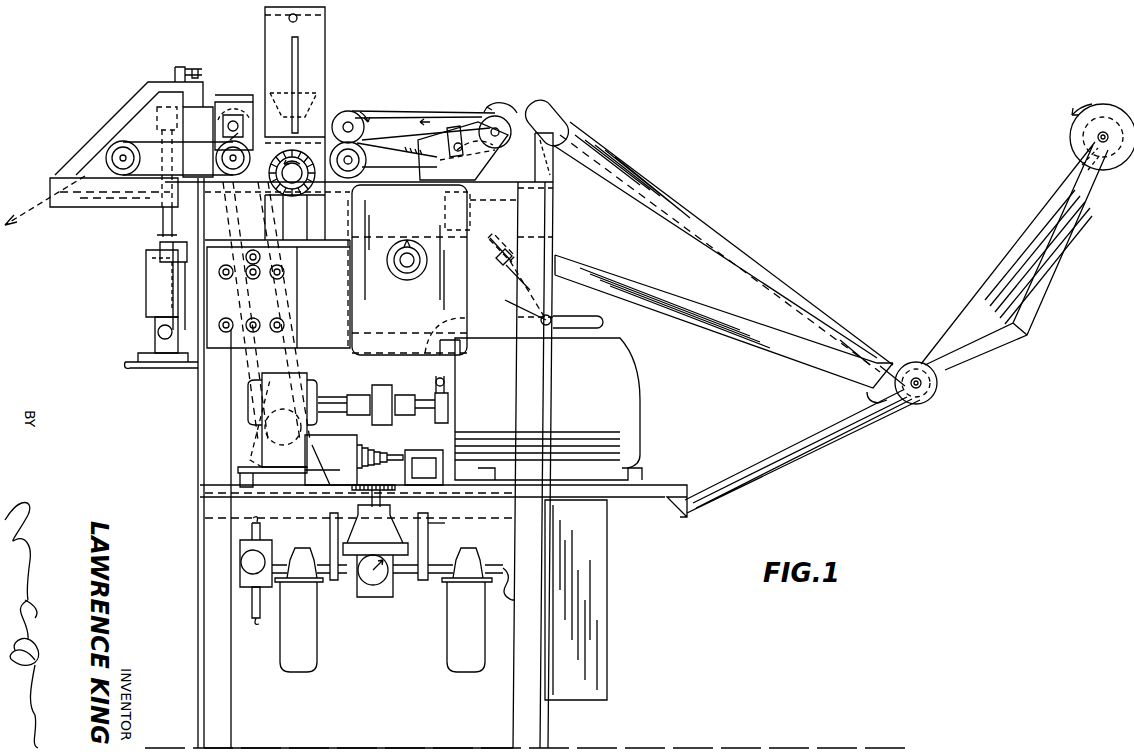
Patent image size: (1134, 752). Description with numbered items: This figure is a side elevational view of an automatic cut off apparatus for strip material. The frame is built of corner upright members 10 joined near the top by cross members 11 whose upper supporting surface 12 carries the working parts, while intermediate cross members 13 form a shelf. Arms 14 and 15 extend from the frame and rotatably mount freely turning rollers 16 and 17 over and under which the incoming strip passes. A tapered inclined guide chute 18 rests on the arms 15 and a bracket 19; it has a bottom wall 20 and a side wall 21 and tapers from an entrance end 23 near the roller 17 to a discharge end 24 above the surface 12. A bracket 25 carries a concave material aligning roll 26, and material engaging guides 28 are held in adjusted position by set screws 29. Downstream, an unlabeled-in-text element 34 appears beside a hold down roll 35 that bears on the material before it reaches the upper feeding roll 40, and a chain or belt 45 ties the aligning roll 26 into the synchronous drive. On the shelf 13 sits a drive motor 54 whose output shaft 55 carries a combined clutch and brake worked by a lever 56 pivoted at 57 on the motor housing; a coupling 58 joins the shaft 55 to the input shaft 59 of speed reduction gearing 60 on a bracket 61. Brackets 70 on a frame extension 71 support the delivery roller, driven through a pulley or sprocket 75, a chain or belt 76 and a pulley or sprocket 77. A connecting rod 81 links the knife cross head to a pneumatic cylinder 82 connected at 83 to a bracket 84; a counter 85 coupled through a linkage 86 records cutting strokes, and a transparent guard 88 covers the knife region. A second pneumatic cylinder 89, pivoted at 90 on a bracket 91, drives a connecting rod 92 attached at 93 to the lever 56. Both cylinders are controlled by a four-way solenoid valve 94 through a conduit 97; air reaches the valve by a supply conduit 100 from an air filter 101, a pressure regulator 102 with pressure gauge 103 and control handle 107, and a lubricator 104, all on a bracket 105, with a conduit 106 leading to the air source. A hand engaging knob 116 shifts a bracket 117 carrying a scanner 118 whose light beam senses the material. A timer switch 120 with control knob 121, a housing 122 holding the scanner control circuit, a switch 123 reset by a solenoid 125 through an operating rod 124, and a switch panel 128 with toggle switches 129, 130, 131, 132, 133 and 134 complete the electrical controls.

The corner upright members 10 is at (198, 636).
The cross members 11 is at (507, 210).
The upper supporting surface 12 is at (507, 186).
The intermediate cross members 13 is at (485, 508).
The arm 14 is at (780, 448).
The arm 15 is at (718, 312).
The roll 16 is at (1075, 142).
The roller 17 is at (939, 388).
The tapered inclined guide chute 18 is at (832, 320).
The bracket 19 is at (575, 130).
The bottom wall 20 is at (672, 249).
The side wall 21 is at (784, 272).
The entrance end 23 is at (867, 400).
The discharge end 24 is at (540, 112).
The bracket 25 is at (480, 160).
The concave material aligning roll 26 is at (503, 120).
The material engaging guides 28 is at (460, 126).
The set screws 29 is at (447, 128).
The pulley 34 is at (372, 134).
The hold down roll 35 is at (355, 113).
The upper feeding roll 40 is at (236, 102).
The chain or belt 45 is at (486, 116).
The drive motor 54 is at (665, 391).
The output shaft 55 is at (424, 398).
The lever 56 is at (605, 322).
The pivot 57 is at (448, 381).
The coupling 58 is at (378, 392).
The input shaft 59 is at (333, 396).
The speed reduction gearing 60 is at (250, 405).
The bracket 61 is at (238, 469).
The brackets 70 is at (83, 175).
The extension 71 is at (73, 208).
The pulley or sprocket 75 is at (124, 176).
The chain or belt 76 is at (206, 145).
The pulley or sprocket 77 is at (216, 160).
The connecting rod 81 is at (163, 228).
The pneumatic cylinder 82 is at (146, 282).
The connection 83 is at (158, 338).
The bracket 84 is at (140, 366).
The counter 85 is at (175, 74).
The linkage 86 is at (202, 73).
The transparent guard 88 is at (116, 118).
The pneumatic cylinder 89 is at (494, 238).
The pivot mounting 90 is at (456, 213).
The bracket 91 is at (482, 211).
The connecting rod 92 is at (513, 263).
The pivotal attachment 93 is at (551, 315).
The four-way solenoid valve 94 is at (240, 577).
The conduit 97 is at (254, 620).
The supply conduit 100 is at (283, 556).
The air filter 101 is at (452, 652).
The pressure regulator 102 is at (428, 540).
The pressure gauge 103 is at (378, 578).
The lubricator 104 is at (306, 644).
The bracket 105 is at (428, 523).
The conduit 106 is at (511, 598).
The manually operable control handle 107 is at (384, 491).
The hand engaging knob 116 is at (318, 190).
The bracket 117 is at (320, 43).
The scanner 118 is at (310, 109).
The timer switch 120 is at (410, 310).
The control knob 121 is at (403, 241).
The housing 122 is at (610, 580).
The switch 123 is at (337, 450).
The operating rod 124 is at (388, 452).
The solenoid 125 is at (424, 450).
The switch panel 128 is at (295, 306).
The toggle switch 129 is at (285, 325).
The toggle switch 130 is at (225, 318).
The toggle switch 131 is at (225, 266).
The toggle switch 132 is at (285, 272).
The toggle switch 133 is at (262, 256).
The toggle switch 134 is at (254, 280).